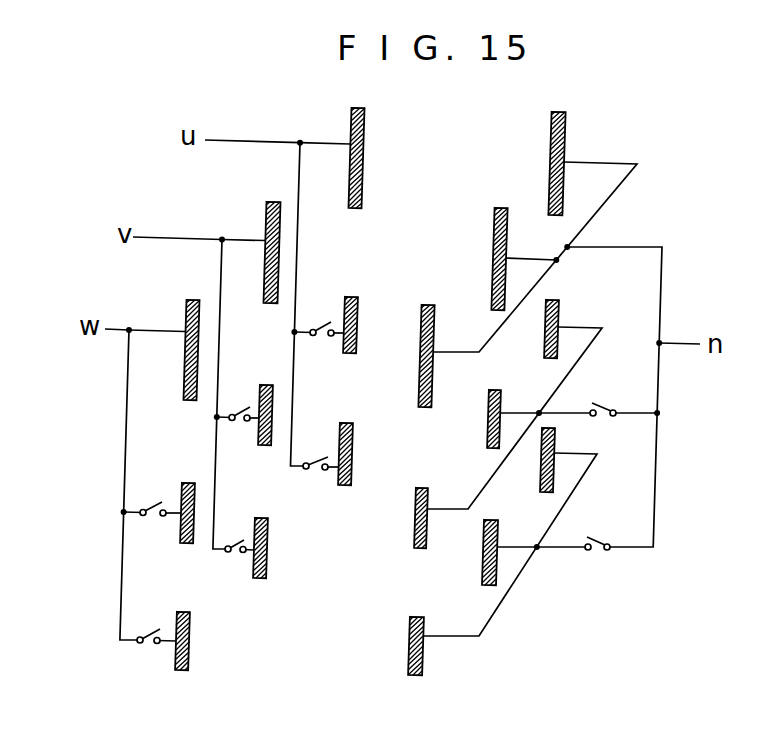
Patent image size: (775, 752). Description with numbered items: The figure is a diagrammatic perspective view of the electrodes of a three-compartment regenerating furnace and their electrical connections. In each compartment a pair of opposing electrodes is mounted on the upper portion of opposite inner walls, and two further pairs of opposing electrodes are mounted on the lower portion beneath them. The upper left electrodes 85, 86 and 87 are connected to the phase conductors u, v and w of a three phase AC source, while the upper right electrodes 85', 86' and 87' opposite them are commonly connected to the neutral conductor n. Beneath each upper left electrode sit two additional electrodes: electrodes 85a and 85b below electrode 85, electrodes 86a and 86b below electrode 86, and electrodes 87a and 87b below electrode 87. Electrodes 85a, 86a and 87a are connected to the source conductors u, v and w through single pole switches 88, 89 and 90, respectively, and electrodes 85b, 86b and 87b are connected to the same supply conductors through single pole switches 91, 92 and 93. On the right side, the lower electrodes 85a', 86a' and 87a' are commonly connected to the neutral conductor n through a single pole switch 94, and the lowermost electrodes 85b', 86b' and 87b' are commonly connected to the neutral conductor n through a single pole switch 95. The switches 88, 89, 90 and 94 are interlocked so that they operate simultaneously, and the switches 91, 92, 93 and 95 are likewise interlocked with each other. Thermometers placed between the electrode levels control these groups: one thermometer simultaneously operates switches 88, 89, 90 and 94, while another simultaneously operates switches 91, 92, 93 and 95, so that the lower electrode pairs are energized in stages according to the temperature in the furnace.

The electrode 85 is at (385, 158).
The electrode 86 is at (251, 246).
The electrode 87 is at (169, 339).
The electrode 85a is at (358, 304).
The electrode 85b is at (381, 454).
The electrode 86a is at (259, 399).
The electrode 86b is at (293, 553).
The electrode 87a is at (170, 495).
The electrode 87b is at (221, 644).
The electrode 85' is at (587, 162).
The electrode 86' is at (472, 253).
The electrode 87' is at (450, 346).
The electrode 85a' is at (578, 309).
The electrode 85b' is at (581, 459).
The electrode 86a' is at (496, 403).
The electrode 86b' is at (453, 555).
The electrode 87a' is at (443, 501).
The electrode 87b' is at (453, 649).
The single pole switch 88 is at (321, 341).
The single pole switch 89 is at (239, 428).
The single pole switch 90 is at (154, 520).
The single pole switch 91 is at (317, 458).
The single pole switch 92 is at (229, 541).
The single pole switch 93 is at (145, 650).
The single pole switch 94 is at (604, 407).
The single pole switch 95 is at (597, 553).